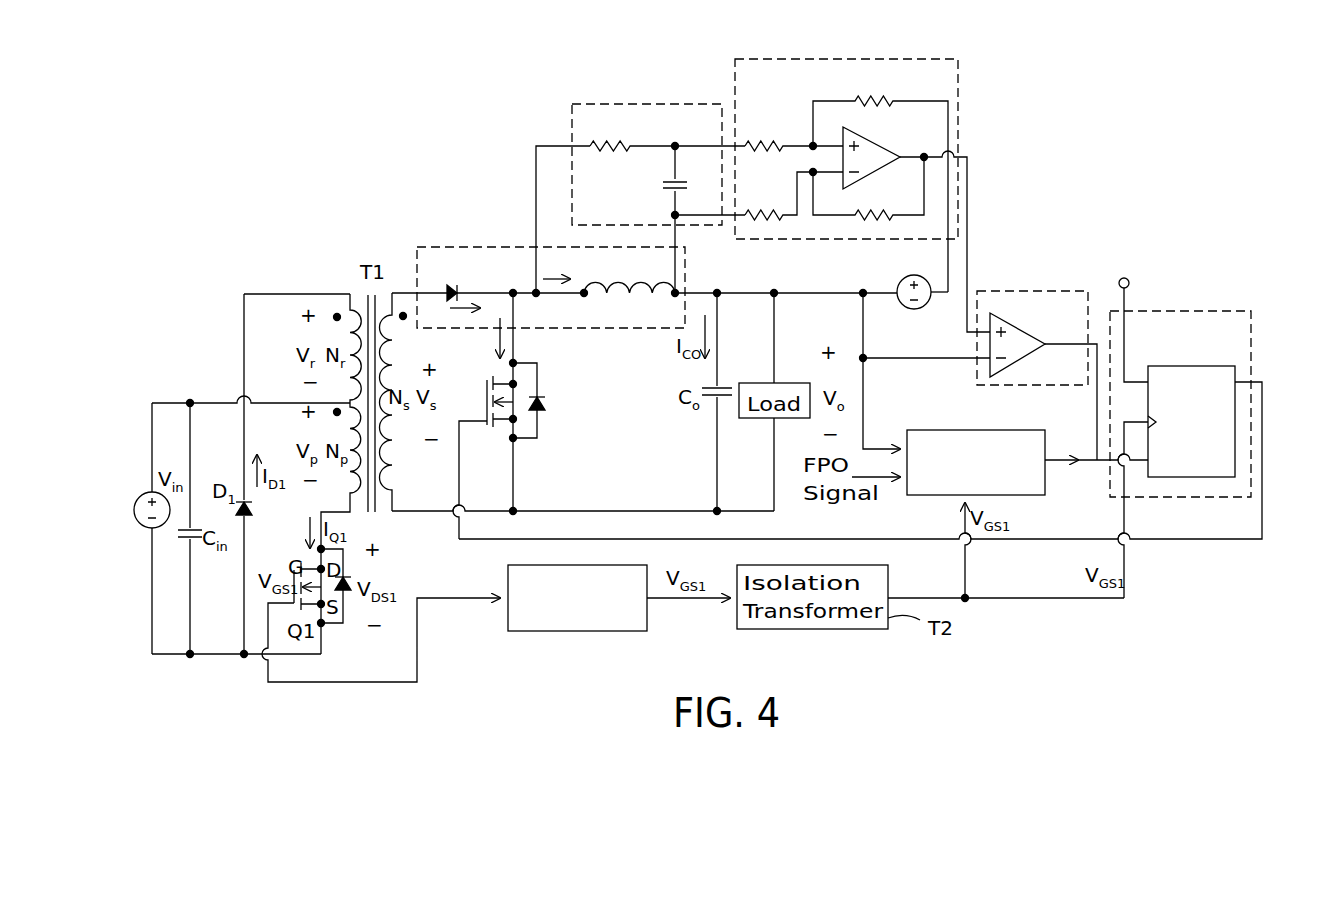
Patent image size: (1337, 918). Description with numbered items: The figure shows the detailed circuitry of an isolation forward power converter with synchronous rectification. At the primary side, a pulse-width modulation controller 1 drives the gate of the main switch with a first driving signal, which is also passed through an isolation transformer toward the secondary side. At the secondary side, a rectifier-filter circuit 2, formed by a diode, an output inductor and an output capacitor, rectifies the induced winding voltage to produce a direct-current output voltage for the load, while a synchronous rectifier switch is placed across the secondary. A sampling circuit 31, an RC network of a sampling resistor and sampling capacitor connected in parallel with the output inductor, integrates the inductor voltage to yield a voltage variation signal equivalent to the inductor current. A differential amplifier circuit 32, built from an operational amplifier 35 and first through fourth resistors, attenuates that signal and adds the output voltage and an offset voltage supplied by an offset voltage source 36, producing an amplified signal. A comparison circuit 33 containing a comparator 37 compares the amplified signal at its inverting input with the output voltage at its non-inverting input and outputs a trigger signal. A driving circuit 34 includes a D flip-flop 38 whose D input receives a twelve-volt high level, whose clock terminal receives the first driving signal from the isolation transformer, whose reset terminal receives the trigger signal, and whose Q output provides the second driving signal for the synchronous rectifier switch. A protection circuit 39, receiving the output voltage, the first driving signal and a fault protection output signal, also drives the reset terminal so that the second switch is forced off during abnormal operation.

The pulse-width modulation controller 1 is at (647, 618).
The rectifier-filter circuit 2 is at (472, 245).
The sampling circuit 31 is at (663, 102).
The differential amplifier circuit 32 is at (884, 193).
The comparison circuit 33 is at (1037, 347).
The driving circuit 34 is at (863, 424).
The operational amplifier 35 is at (868, 142).
The offset voltage source 36 is at (902, 280).
The comparator 37 is at (1018, 328).
The D flip-flop 38 is at (1197, 366).
The protection circuit 39 is at (983, 430).